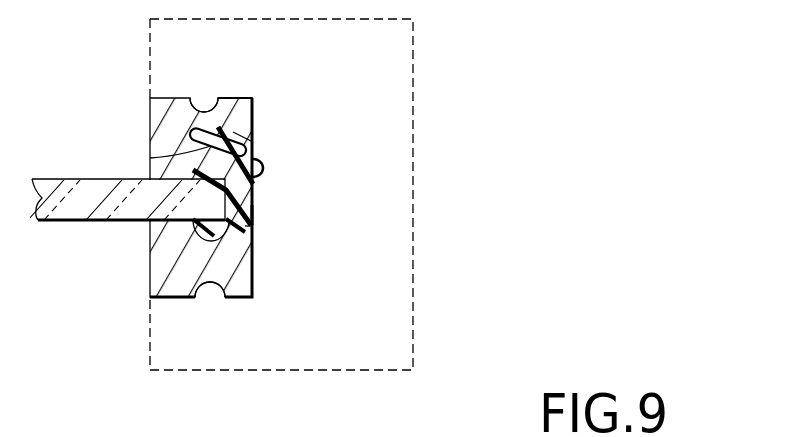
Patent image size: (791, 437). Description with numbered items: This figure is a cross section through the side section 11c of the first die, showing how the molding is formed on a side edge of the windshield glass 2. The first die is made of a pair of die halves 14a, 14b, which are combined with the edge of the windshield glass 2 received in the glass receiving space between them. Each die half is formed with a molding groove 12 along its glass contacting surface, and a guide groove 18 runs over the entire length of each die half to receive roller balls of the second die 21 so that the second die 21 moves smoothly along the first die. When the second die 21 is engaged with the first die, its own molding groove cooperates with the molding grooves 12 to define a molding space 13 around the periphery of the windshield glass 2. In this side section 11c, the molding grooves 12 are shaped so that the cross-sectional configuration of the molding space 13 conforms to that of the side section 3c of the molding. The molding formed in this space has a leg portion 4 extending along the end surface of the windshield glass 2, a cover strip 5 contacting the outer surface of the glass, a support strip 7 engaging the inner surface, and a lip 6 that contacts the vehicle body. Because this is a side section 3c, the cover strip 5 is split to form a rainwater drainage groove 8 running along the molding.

The windshield glass 2 is at (76, 208).
The side section of the molding 3c is at (257, 203).
The leg portion 4 is at (256, 192).
The cover strip 5 is at (243, 120).
The lip 6 is at (270, 162).
The support strip 7 is at (197, 235).
The rainwater drainage groove 8 is at (150, 158).
The side section of the first die 11c is at (150, 128).
The molding grooves 12 is at (261, 226).
The molding space 13 is at (257, 215).
The die half 14a is at (254, 98).
The die half 14b is at (254, 296).
The guide groove 18 is at (197, 95).
The second die 21 is at (414, 82).